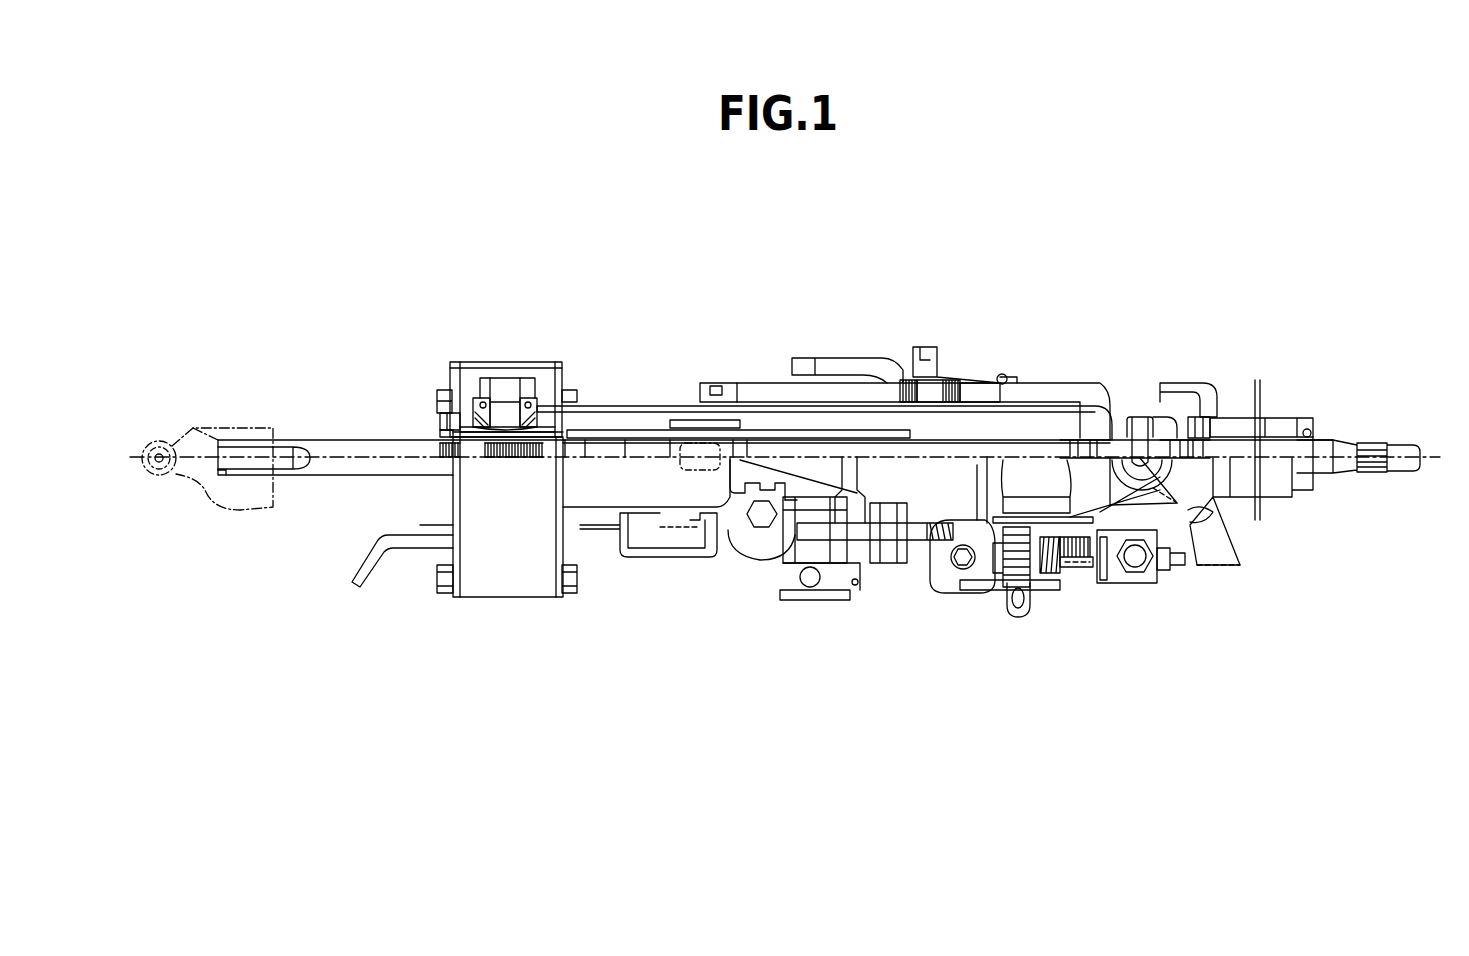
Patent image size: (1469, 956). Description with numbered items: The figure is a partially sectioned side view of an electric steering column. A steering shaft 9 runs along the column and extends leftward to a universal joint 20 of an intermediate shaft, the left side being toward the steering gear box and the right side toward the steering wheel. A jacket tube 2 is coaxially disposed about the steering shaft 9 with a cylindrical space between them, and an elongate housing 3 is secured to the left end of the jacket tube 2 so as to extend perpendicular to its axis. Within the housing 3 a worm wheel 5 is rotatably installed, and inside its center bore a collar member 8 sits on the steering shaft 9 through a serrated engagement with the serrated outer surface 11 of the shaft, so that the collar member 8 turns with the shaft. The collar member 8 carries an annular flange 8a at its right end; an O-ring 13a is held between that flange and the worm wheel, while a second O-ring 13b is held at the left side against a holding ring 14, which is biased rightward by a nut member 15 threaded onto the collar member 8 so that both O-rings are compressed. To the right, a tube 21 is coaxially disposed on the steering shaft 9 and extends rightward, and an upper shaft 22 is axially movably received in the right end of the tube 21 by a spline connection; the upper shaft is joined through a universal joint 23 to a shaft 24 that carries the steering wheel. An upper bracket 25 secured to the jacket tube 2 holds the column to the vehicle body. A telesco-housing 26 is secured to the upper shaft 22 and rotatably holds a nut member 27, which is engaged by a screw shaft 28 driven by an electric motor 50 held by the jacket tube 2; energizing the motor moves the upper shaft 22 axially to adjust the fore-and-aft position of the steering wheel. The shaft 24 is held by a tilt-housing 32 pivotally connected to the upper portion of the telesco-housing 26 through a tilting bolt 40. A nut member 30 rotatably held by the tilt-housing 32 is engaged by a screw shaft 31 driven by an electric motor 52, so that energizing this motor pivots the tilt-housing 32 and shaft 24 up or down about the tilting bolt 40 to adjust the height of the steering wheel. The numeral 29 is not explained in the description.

The jacket tube 2 is at (673, 405).
The housing 3 is at (585, 352).
The worm wheel 5 is at (503, 390).
The collar member 8 is at (520, 433).
The annular flange 8a is at (545, 427).
The steering shaft 9 is at (323, 477).
The serrated outer surface 11 is at (496, 460).
The O-ring 13a is at (530, 422).
The O-ring 13b is at (475, 425).
The holding ring 14 is at (452, 412).
The nut member 15 is at (437, 420).
The universal joint 20 is at (203, 488).
The tube 21 is at (773, 430).
The upper shaft 22 is at (1043, 437).
The universal joint 23 is at (1108, 416).
The shaft 24 is at (1345, 440).
The upper bracket 25 is at (848, 358).
The telesco-housing 26 is at (920, 490).
The nut member 27 is at (882, 560).
The screw shaft 28 is at (855, 572).
The pivot pin 29 is at (963, 570).
The nut member 30 is at (1150, 583).
The screw shaft 31 is at (988, 596).
The tilt-housing 32 is at (1197, 382).
The tilting bolt 40 is at (1197, 560).
The electric motor 50 is at (803, 607).
The electric motor 52 is at (1025, 630).